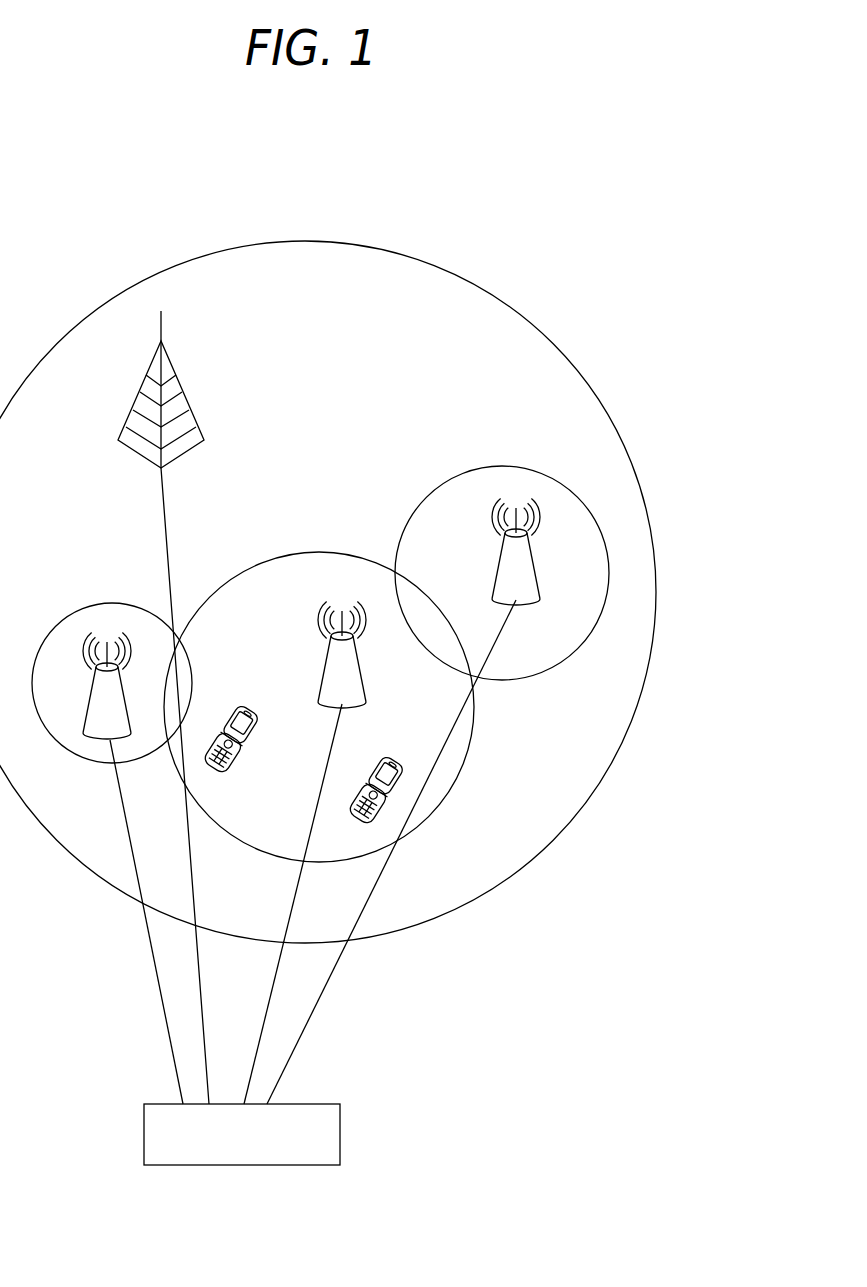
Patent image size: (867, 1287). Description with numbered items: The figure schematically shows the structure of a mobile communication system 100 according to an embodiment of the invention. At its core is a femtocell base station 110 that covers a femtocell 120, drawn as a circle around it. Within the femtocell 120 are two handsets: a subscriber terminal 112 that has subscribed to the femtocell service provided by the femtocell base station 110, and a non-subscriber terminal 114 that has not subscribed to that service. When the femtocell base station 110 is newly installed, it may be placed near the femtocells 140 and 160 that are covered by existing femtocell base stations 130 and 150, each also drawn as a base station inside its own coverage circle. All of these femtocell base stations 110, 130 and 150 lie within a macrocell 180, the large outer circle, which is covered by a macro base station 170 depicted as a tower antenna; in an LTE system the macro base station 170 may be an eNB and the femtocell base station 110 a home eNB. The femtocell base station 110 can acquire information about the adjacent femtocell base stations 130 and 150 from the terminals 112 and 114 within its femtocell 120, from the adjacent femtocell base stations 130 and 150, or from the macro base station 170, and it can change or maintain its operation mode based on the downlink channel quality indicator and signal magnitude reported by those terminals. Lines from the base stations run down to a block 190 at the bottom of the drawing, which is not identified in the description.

The mobile communication system 100 is at (498, 193).
The femtocell base station 110 is at (323, 668).
The subscriber terminal 112 is at (400, 757).
The non-subscriber terminal 114 is at (245, 708).
The femtocell 120 is at (303, 551).
The existing femtocell base station 130 is at (496, 569).
The femtocell 140 is at (531, 467).
The existing femtocell base station 150 is at (88, 699).
The femtocell 160 is at (63, 619).
The macro base station 170 is at (171, 363).
The macrocell 180 is at (536, 325).
The network controller 190 is at (292, 1102).